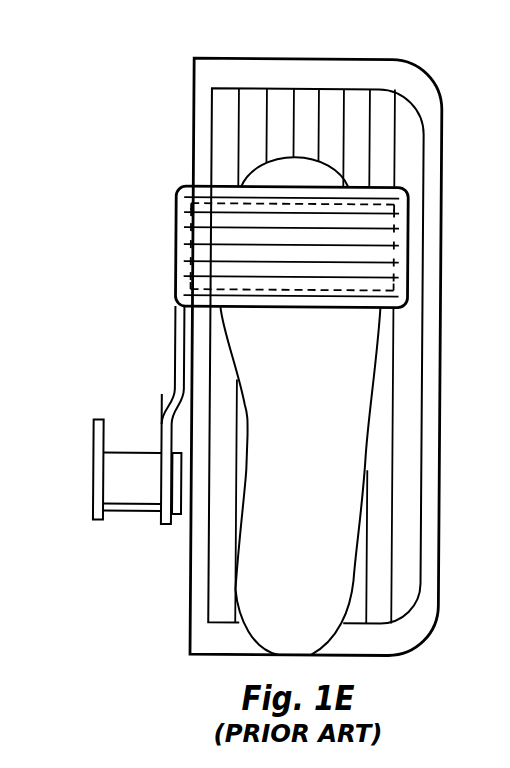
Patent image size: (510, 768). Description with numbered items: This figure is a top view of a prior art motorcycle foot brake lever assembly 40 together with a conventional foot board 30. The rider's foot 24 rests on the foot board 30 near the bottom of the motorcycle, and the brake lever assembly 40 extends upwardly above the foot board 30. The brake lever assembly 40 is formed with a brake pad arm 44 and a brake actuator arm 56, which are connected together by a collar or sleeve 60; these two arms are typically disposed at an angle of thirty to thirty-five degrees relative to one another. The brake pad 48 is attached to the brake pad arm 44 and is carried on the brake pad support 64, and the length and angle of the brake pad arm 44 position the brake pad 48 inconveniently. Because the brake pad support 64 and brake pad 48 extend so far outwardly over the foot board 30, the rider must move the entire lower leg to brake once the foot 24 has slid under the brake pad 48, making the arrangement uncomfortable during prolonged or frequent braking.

The foot board 30 is at (421, 92).
The rider's foot 24 is at (316, 471).
The brake pad 48 is at (178, 224).
The brake pad support 64 is at (382, 223).
The brake pad arm 44 is at (174, 370).
The brake lever assembly 40 is at (152, 398).
The brake actuator arm 56 is at (94, 437).
The collar or sleeve 60 is at (115, 498).